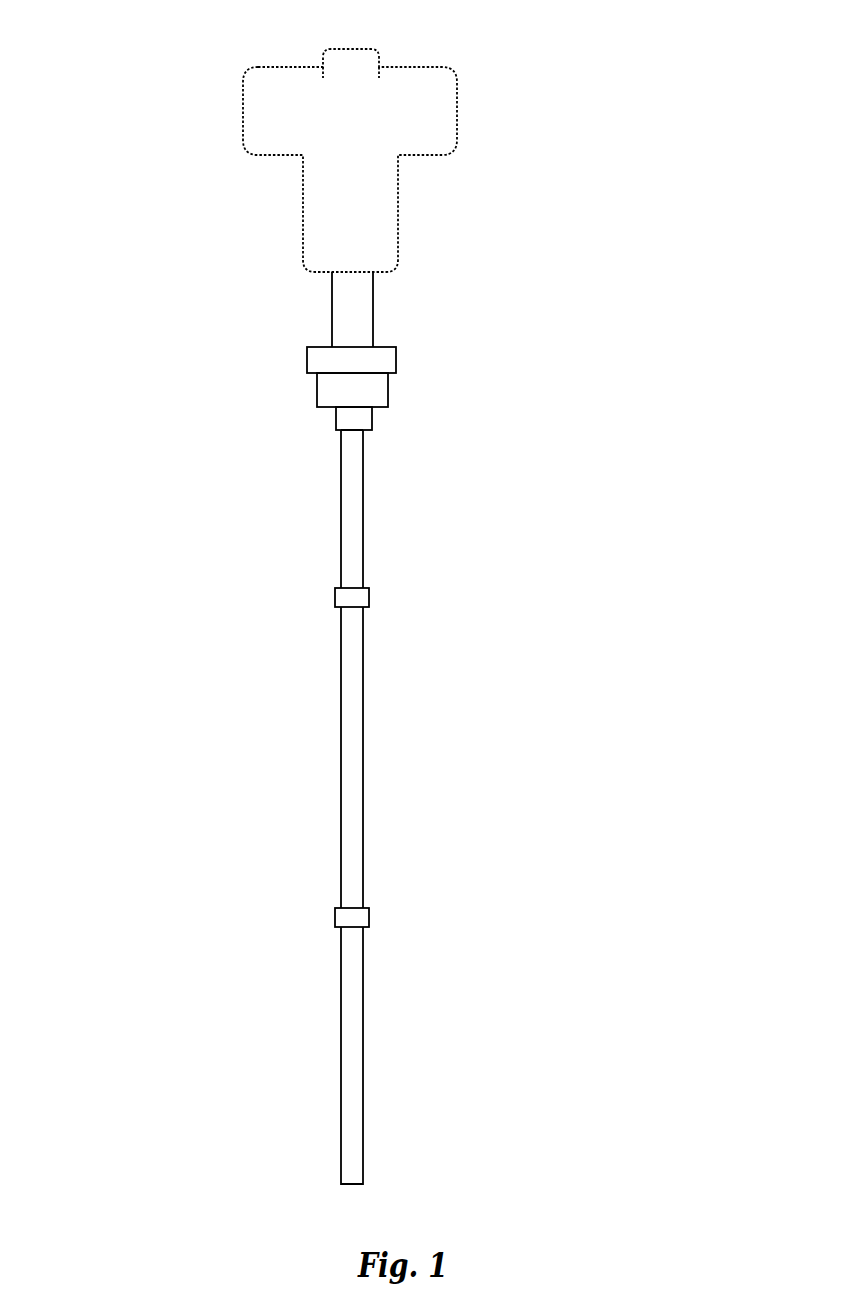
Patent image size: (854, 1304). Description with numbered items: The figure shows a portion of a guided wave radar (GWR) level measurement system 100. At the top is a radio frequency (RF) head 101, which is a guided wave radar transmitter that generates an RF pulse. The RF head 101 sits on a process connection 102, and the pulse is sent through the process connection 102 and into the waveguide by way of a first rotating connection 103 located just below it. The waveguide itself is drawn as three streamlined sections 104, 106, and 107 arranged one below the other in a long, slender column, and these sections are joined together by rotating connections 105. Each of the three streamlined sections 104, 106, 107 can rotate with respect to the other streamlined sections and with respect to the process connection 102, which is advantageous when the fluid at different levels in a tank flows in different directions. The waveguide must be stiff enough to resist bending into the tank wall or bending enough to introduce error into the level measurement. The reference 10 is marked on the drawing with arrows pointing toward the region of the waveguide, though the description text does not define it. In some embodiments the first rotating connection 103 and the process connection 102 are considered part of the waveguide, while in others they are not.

The GWR level measurement system 100 is at (575, 155).
The probe unit 10 is at (562, 840).
The radio frequency (RF) head 101 is at (265, 122).
The process connection 102 is at (312, 364).
The first rotating connection 103 is at (360, 424).
The streamlined section 104 is at (350, 508).
The rotating connection 105 is at (348, 601).
The streamlined section 106 is at (352, 798).
The streamlined section 107 is at (352, 1062).